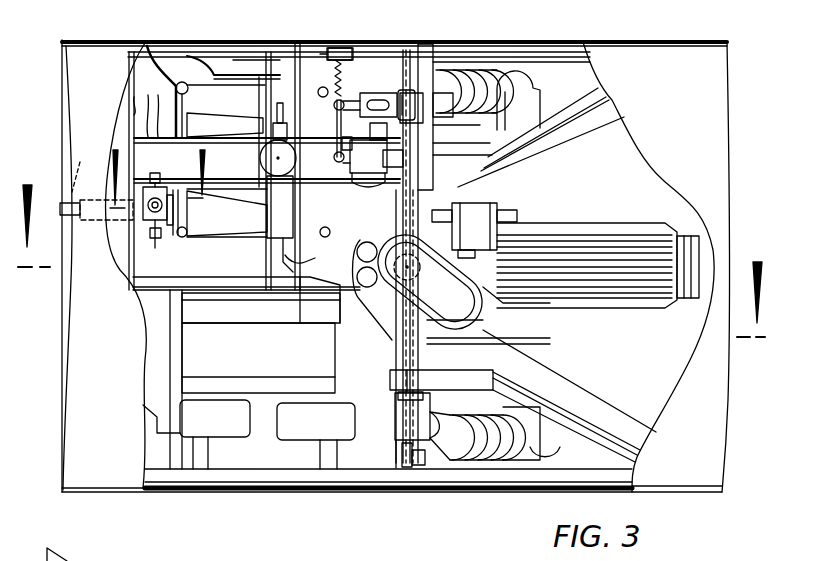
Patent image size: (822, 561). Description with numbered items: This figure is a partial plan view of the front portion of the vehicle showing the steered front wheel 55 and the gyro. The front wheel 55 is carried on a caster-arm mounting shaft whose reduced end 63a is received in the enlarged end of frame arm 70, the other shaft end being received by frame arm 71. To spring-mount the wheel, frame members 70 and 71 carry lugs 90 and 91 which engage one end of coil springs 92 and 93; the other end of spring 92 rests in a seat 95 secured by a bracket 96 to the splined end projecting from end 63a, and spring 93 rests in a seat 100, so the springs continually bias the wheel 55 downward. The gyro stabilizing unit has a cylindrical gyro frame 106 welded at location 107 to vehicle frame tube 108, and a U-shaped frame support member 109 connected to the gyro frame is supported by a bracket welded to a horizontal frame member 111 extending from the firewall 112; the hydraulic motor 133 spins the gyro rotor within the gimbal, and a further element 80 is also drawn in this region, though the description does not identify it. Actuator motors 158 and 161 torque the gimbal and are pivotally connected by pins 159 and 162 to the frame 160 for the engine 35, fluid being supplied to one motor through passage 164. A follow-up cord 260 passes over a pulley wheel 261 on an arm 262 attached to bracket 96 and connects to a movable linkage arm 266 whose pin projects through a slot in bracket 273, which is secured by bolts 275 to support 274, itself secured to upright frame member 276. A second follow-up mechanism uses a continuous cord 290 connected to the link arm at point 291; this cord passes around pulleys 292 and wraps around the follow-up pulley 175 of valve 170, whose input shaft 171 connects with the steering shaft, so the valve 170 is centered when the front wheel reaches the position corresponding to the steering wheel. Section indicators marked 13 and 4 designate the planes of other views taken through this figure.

The U-shaped frame support member 109 is at (203, 67).
The cylindrical gyro frame 106 is at (277, 70).
The welding location 107 is at (303, 60).
The vehicle frame tube 108 is at (320, 50).
The support 274 is at (423, 57).
The bolts 275 is at (433, 52).
The seat 100 is at (450, 56).
The coil spring 93 is at (537, 88).
The lug 91 is at (540, 92).
The frame arm 71 is at (572, 110).
The motor 80 is at (487, 197).
The steered front wheel 55 is at (593, 223).
The bracket 273 is at (437, 133).
The upright frame member 276 is at (433, 187).
The movable linkage arm 266 is at (393, 107).
The pulleys 292 is at (323, 90).
The continuous cord 290 is at (326, 141).
The connection point 291 is at (337, 195).
The actuator motor 158 is at (310, 271).
The passage 164 is at (288, 255).
The actuator motor 161 is at (247, 223).
The hydraulic motor 133 is at (258, 107).
The firewall 112 is at (134, 97).
The horizontal frame member 111 is at (153, 112).
The input shaft 171 is at (81, 168).
The pulley 175 is at (183, 180).
The valve 170 is at (133, 222).
The engine frame 160 is at (147, 288).
The pin 162 is at (243, 290).
The pin 159 is at (311, 300).
The engine 35 is at (267, 396).
The follow-up cord 260 is at (395, 323).
The reduced end of shaft 63a is at (397, 393).
The bracket 96 is at (437, 414).
The lug 90 is at (543, 448).
The frame arm 70 is at (605, 430).
The arm 262 is at (410, 468).
The pulley wheel 261 is at (402, 475).
The seat 95 is at (450, 455).
The coil spring 92 is at (477, 455).
The section line 13 is at (159, 188).
The section line 4 is at (388, 278).